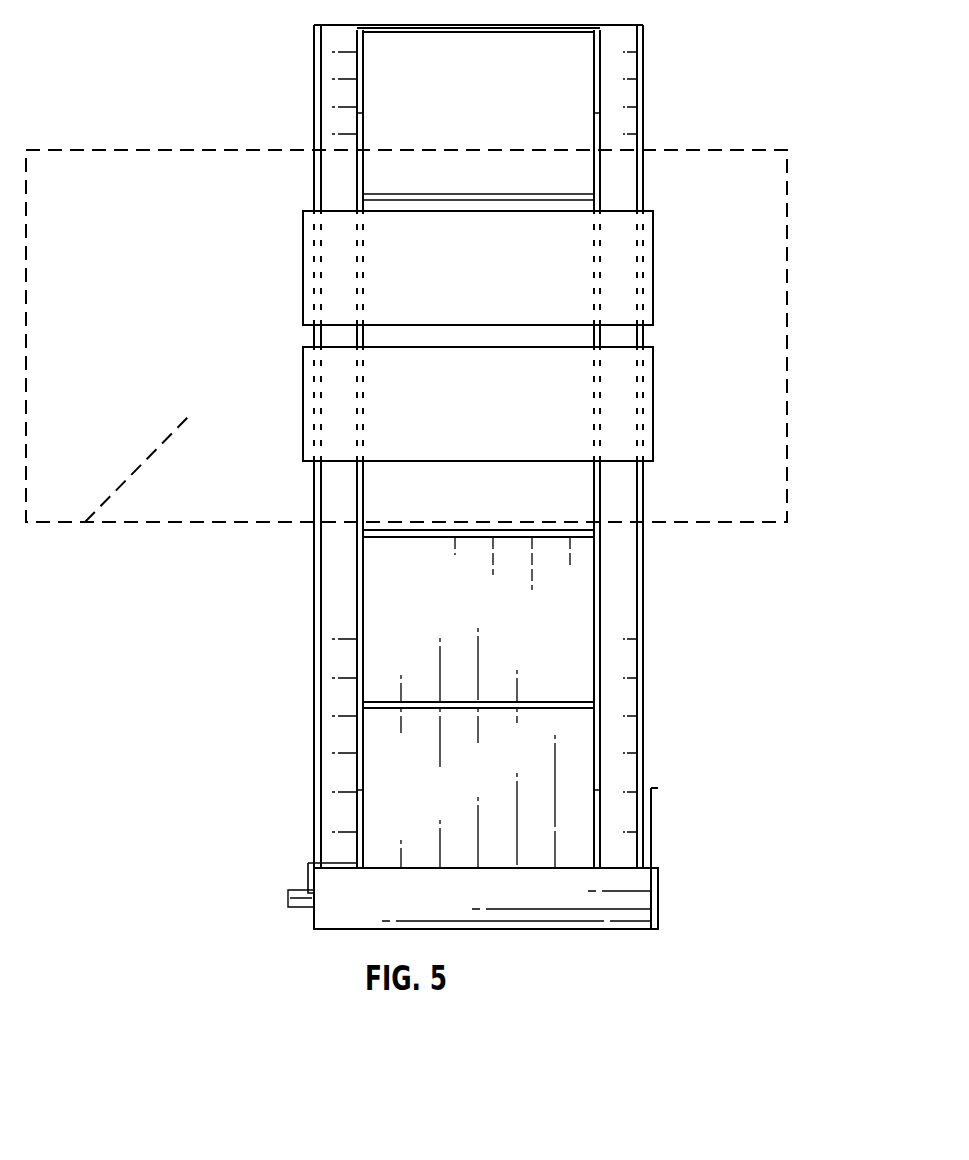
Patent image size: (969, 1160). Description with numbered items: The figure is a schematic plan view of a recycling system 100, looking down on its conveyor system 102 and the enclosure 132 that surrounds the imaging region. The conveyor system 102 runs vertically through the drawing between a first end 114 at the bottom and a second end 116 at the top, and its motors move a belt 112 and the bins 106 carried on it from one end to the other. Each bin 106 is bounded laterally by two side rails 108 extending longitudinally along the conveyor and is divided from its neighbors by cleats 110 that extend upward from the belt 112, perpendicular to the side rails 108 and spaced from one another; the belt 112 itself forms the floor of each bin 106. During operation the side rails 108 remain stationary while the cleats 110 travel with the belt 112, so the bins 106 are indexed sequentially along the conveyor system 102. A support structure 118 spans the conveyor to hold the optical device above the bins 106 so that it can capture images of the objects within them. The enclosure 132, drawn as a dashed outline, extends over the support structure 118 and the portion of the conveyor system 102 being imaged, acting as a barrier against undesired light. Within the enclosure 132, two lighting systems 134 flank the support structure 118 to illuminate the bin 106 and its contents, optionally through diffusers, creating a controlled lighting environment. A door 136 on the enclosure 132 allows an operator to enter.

The recycling system 100 is at (449, 466).
The conveyor system 102 is at (643, 612).
The bin 106 is at (555, 518).
The side rail 108 is at (360, 600).
The cleat 110 is at (380, 705).
The belt 112 is at (385, 647).
The first end 114 is at (314, 832).
The second end 116 is at (314, 44).
The support structure 118 is at (653, 335).
The enclosure 132 is at (787, 302).
The lighting system 134 is at (303, 260).
The door 136 is at (168, 435).